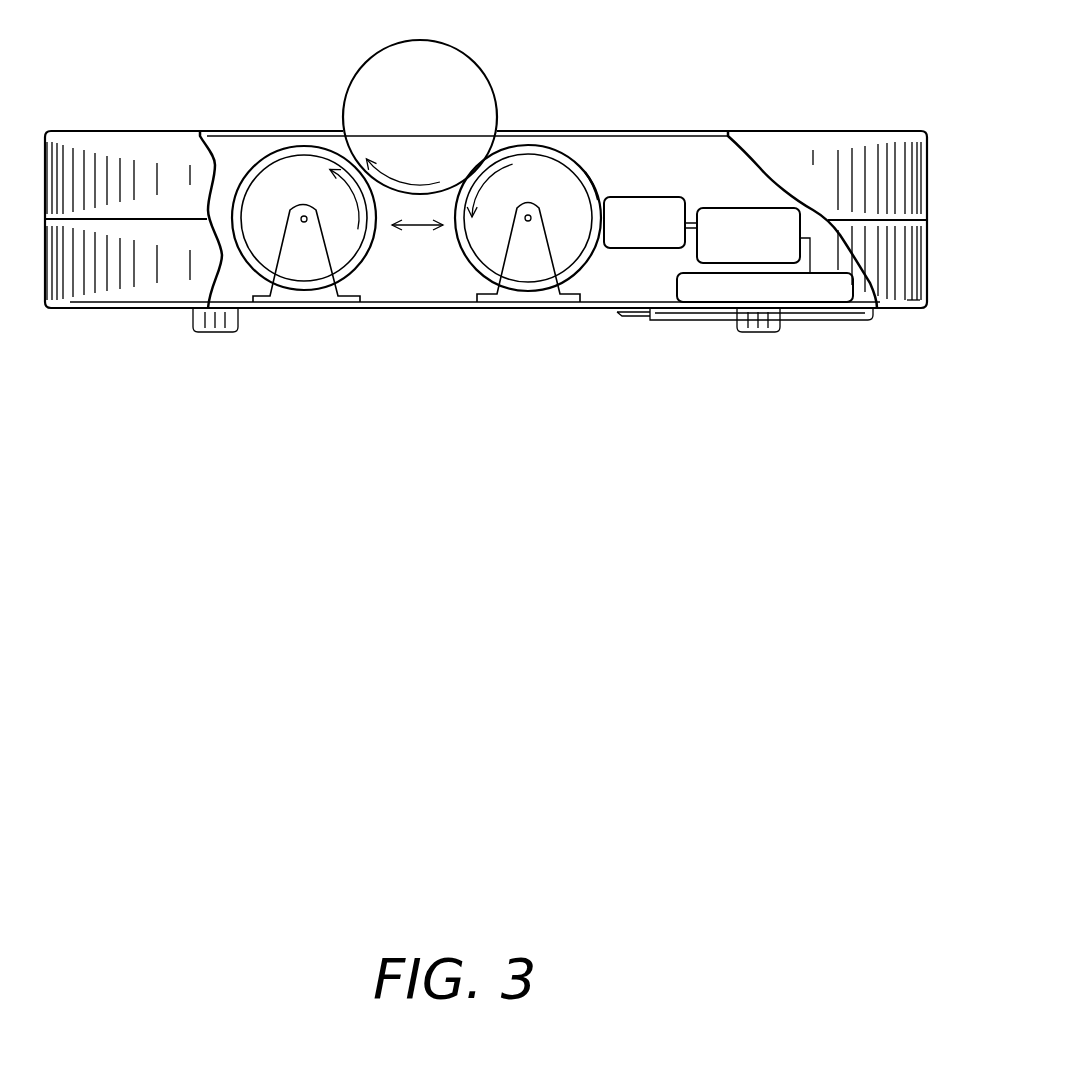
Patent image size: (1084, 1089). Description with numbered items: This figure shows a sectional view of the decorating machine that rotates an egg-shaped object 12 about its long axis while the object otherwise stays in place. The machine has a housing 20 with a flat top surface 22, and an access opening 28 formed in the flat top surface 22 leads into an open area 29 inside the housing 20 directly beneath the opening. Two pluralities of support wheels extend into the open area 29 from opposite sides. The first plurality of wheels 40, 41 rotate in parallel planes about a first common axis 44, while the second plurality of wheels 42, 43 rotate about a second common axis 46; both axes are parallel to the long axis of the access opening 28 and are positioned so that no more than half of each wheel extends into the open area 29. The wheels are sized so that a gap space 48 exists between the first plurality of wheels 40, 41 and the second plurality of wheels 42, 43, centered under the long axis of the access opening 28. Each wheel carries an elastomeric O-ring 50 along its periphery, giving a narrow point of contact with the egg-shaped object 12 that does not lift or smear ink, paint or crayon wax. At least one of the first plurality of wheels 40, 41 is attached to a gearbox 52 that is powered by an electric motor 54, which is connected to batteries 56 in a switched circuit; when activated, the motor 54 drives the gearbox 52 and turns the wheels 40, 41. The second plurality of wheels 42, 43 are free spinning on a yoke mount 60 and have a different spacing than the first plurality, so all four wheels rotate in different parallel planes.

The egg-shaped object 12 is at (467, 55).
The housing 20 is at (928, 157).
The flat top surface 22 is at (803, 129).
The access opening 28 is at (342, 129).
The open area 29 is at (420, 263).
The support wheel 40 is at (528, 181).
The support wheel 41 is at (563, 148).
The support wheel 42 is at (273, 179).
The support wheel 43 is at (257, 162).
The first common axis 44 is at (528, 222).
The second common axis 46 is at (303, 222).
The gap space 48 is at (420, 226).
The O-ring 50 is at (592, 182).
The gearbox 52 is at (637, 197).
The electric motor 54 is at (717, 207).
The batteries 56 is at (817, 290).
The yoke mount 60 is at (307, 275).